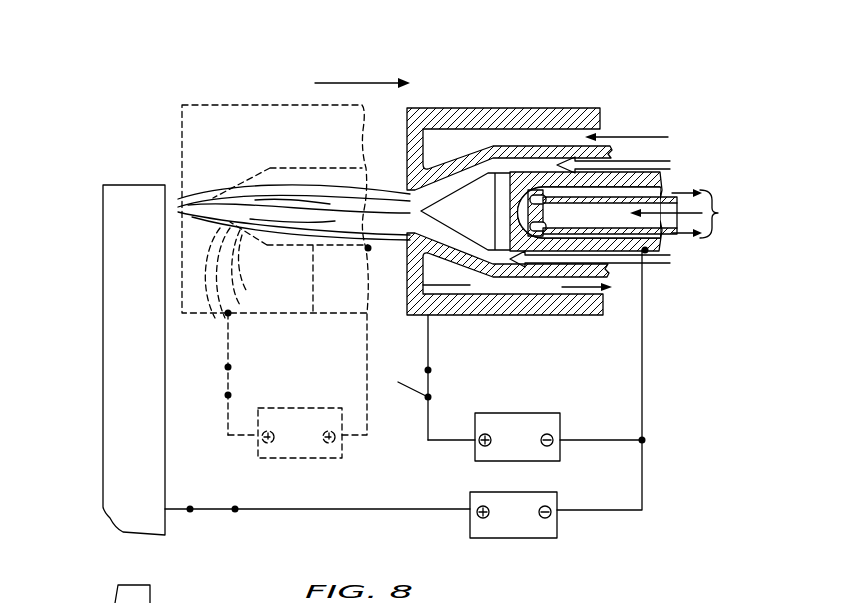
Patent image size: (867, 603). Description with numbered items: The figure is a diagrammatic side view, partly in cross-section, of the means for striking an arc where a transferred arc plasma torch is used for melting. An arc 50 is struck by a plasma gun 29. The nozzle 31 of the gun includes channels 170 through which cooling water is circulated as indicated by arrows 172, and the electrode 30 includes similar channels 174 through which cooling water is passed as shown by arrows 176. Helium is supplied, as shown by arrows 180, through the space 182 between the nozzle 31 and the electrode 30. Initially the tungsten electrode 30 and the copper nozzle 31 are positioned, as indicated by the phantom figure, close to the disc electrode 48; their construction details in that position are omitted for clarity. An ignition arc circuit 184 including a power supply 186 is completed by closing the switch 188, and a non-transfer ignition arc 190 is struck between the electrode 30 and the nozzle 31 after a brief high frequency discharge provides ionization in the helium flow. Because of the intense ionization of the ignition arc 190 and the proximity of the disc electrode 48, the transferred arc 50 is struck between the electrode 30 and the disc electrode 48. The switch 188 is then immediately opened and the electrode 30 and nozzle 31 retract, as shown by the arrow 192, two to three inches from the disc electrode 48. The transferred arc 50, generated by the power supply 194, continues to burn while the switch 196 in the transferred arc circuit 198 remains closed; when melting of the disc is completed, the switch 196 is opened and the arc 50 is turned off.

The plasma gun 29 is at (651, 50).
The electrode 30 is at (313, 314).
The nozzle 31 is at (222, 104).
The disc electrode 48 is at (103, 332).
The arc 50 is at (381, 202).
The channels 170 is at (537, 133).
The arrows 172 is at (628, 140).
The channels 174 is at (597, 190).
The arrows 176 is at (688, 213).
The arrows 180 is at (668, 163).
The space 182 is at (468, 250).
The ignition arc circuit 184 is at (224, 444).
The power supply 186 is at (333, 458).
The switch 188 is at (428, 390).
The non-transfer ignition arc 190 is at (222, 316).
The arrow 192 is at (355, 82).
The power supply 194 is at (558, 538).
The switch 196 is at (217, 509).
The transferred arc circuit 198 is at (645, 477).